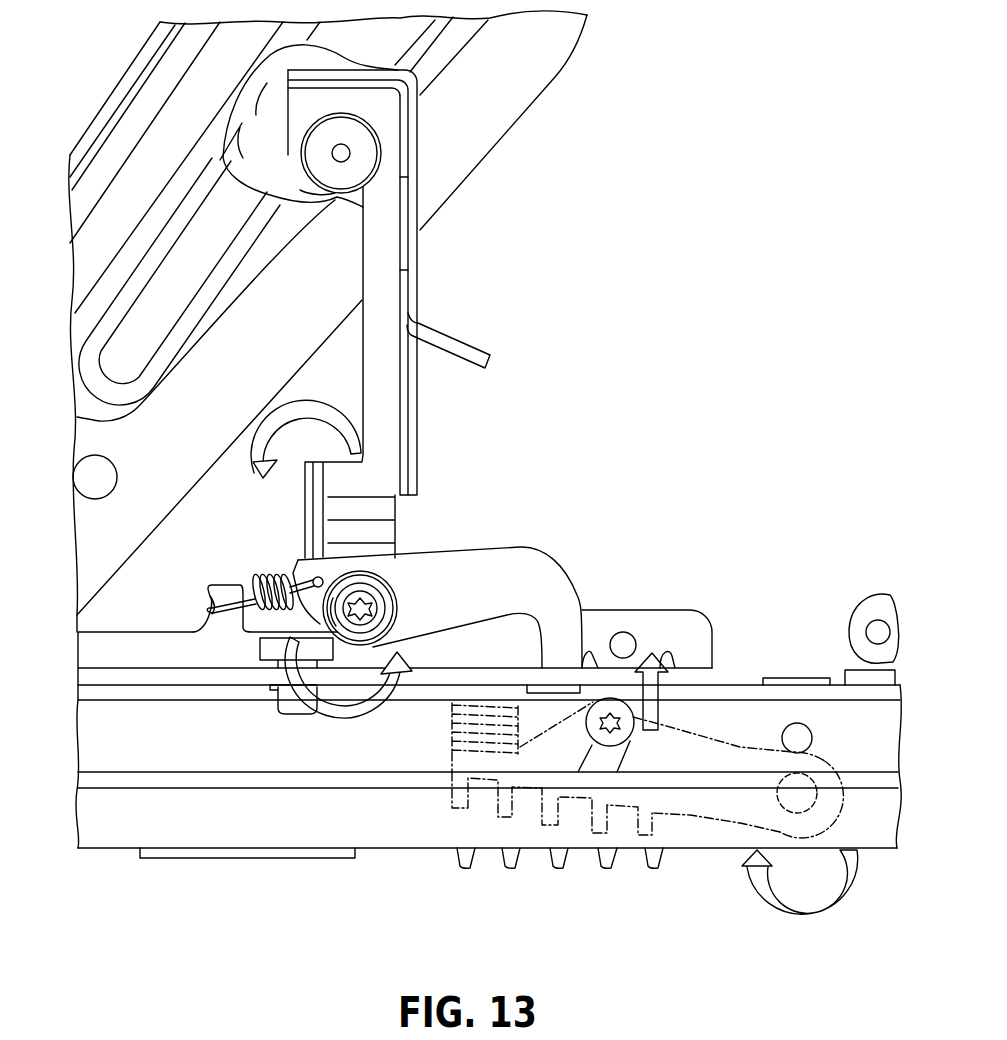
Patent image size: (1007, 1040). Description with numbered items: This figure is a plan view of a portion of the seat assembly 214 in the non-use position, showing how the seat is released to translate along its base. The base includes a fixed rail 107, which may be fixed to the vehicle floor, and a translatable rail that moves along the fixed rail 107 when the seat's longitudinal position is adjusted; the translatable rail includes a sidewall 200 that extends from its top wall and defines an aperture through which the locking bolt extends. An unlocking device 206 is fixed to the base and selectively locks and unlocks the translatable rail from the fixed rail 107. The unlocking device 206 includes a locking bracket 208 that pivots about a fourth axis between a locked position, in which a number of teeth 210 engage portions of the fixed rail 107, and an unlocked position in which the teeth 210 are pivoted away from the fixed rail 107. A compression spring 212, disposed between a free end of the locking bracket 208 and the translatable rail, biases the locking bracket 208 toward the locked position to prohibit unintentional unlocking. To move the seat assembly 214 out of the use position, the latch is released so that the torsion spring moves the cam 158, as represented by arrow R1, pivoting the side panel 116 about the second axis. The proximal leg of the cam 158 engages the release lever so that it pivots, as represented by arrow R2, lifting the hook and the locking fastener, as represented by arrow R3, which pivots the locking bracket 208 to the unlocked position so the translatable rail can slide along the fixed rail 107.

The fixed rail 107 is at (247, 818).
The side panel 116 is at (157, 158).
The cam 158 is at (387, 293).
The sidewall 200 is at (868, 722).
The unlocking device 206 is at (672, 870).
The locking bracket 208 is at (740, 743).
The teeth 210 is at (497, 802).
The compression spring 212 is at (452, 715).
The seat assembly 214 is at (658, 262).
The arrow R1 is at (317, 403).
The arrow R2 is at (337, 710).
The arrow R3 is at (662, 715).